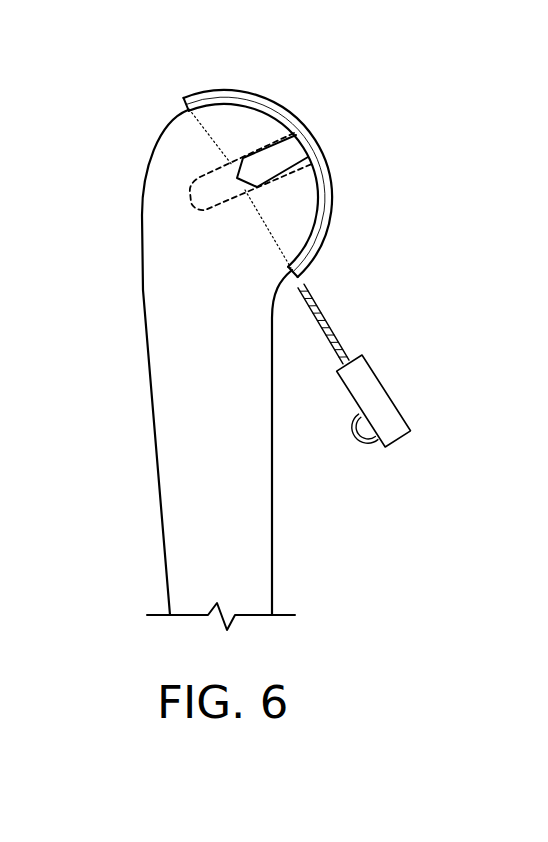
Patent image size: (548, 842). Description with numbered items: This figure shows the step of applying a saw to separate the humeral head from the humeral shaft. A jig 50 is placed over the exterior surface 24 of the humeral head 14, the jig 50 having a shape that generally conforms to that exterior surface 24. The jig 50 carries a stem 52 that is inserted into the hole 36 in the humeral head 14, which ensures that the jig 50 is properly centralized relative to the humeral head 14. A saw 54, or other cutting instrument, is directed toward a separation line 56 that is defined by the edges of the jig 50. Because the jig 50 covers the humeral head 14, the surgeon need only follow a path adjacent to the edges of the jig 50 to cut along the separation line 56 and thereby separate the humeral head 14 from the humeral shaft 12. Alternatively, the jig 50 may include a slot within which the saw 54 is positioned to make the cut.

The humeral shaft 12 is at (155, 217).
The humeral head 14 is at (303, 213).
The exterior surface 24 is at (189, 109).
The hole 36 is at (210, 205).
The jig 50 is at (251, 96).
The stem 52 is at (293, 150).
The saw 54 is at (370, 392).
The separation line 56 is at (270, 236).